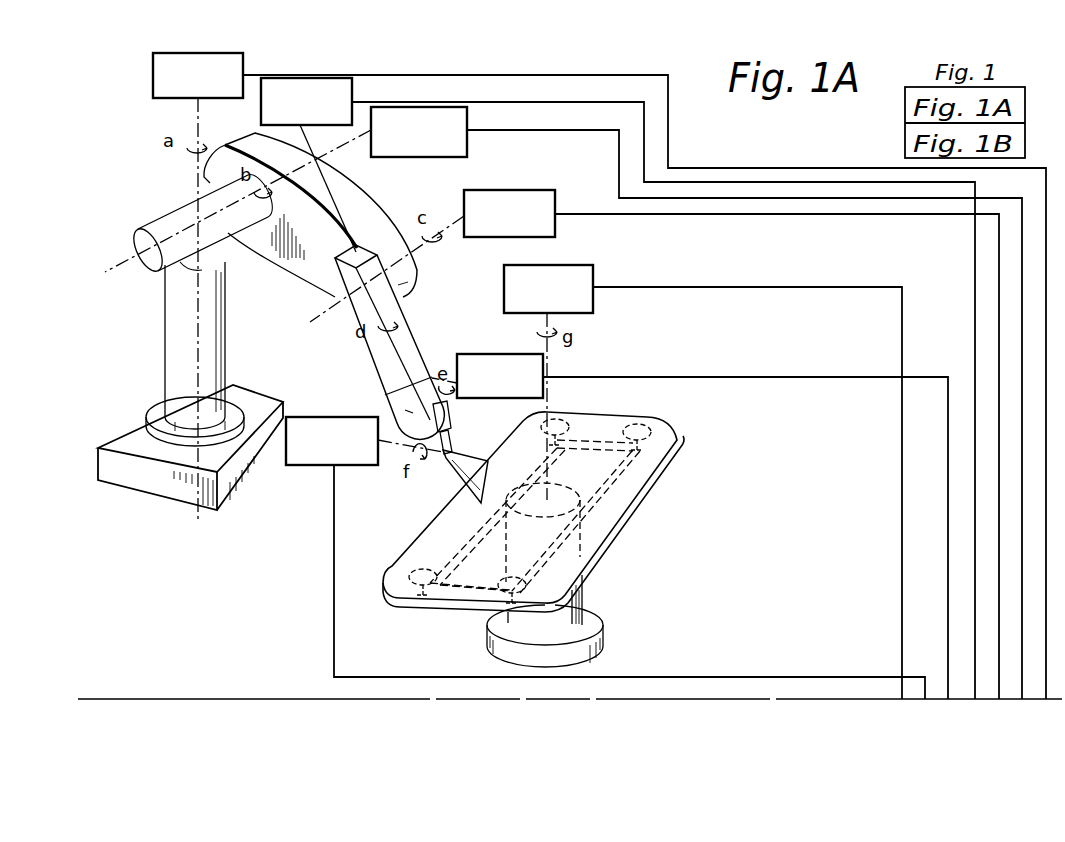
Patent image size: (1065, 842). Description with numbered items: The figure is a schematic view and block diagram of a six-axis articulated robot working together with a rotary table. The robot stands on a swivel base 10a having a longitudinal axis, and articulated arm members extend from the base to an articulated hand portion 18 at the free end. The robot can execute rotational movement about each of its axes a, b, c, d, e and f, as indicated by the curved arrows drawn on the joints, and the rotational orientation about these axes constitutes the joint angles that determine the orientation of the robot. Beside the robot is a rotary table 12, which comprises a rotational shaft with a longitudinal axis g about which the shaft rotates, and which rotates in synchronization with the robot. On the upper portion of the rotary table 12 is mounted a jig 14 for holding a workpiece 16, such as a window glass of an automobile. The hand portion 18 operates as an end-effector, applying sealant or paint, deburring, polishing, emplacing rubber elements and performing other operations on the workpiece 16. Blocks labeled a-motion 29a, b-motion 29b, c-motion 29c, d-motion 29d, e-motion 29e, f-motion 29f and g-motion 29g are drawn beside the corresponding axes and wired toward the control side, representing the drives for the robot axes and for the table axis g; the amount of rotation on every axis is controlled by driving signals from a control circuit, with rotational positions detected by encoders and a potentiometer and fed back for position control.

The a-motion drive 29a is at (153, 88).
The b-motion drive 29b is at (467, 148).
The c-motion drive 29c is at (555, 190).
The d-motion drive 29d is at (352, 90).
The e-motion drive 29e is at (480, 354).
The f-motion drive 29f is at (317, 417).
The g-motion drive 29g is at (593, 266).
The swivel base 10a is at (176, 375).
The rotary table 12 is at (584, 590).
The jig 14 is at (628, 509).
The workpiece 16 is at (625, 413).
The hand portion 18 is at (471, 482).